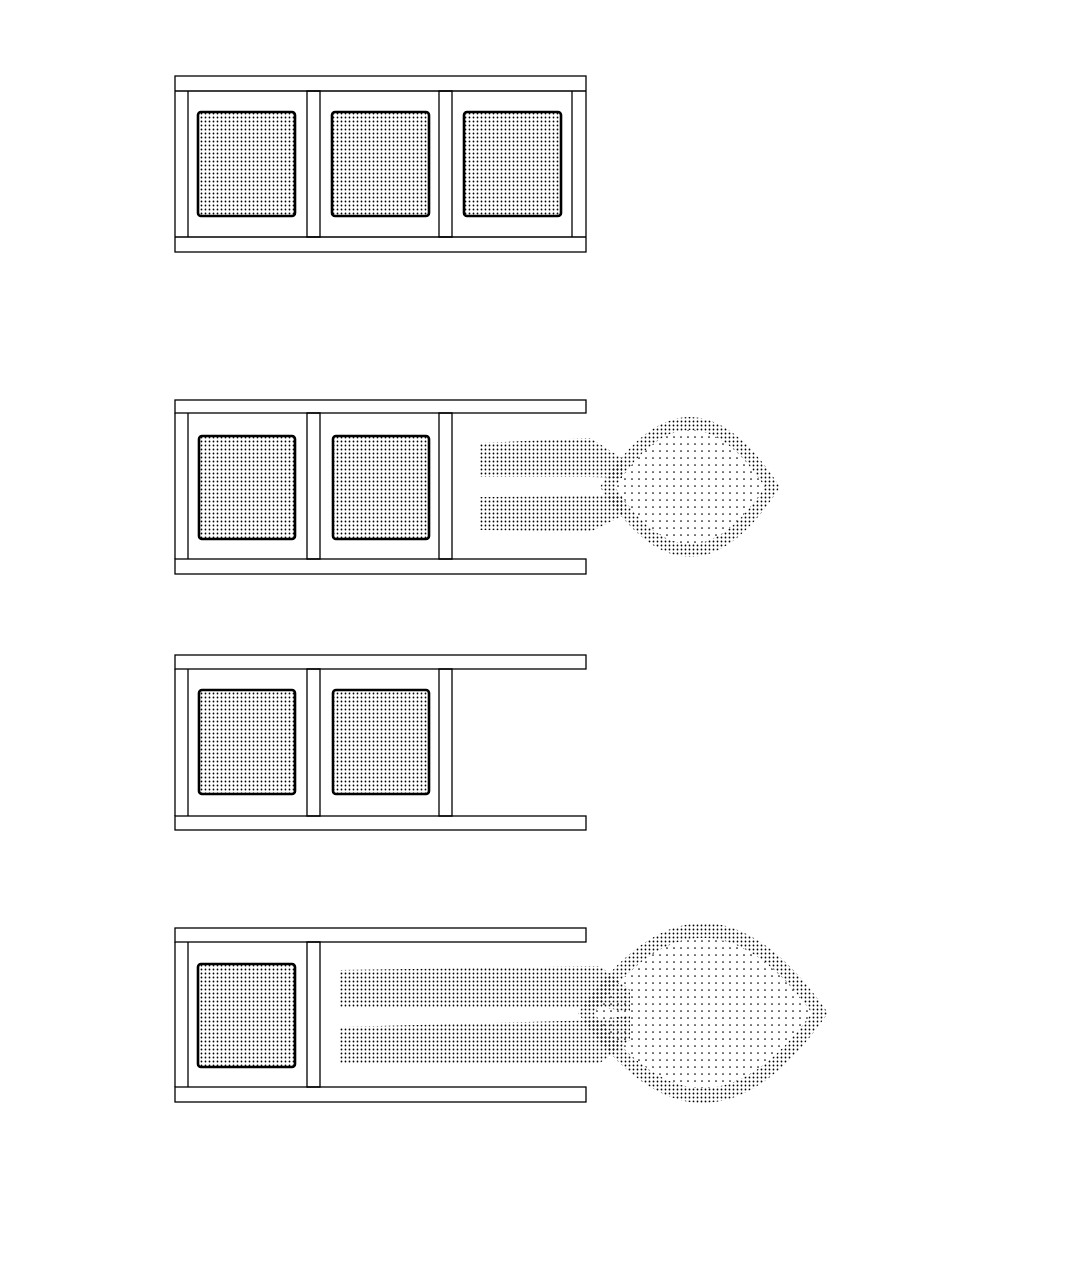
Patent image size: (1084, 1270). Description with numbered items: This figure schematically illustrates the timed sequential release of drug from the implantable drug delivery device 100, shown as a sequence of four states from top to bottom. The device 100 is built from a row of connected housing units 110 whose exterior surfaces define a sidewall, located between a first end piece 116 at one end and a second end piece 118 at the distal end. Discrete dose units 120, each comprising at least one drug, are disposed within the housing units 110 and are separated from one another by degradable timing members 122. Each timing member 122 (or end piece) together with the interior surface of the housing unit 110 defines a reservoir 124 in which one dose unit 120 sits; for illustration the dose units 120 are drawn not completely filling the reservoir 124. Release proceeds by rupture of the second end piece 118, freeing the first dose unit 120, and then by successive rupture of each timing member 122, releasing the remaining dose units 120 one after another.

The drug delivery device 100 is at (716, 40).
The housing unit 110 is at (222, 83).
The first end piece 116 is at (175, 196).
The second end piece 118 is at (580, 155).
The discrete dose unit 120 is at (255, 110).
The degradable timing member 122 is at (318, 232).
The reservoir 124 is at (307, 263).